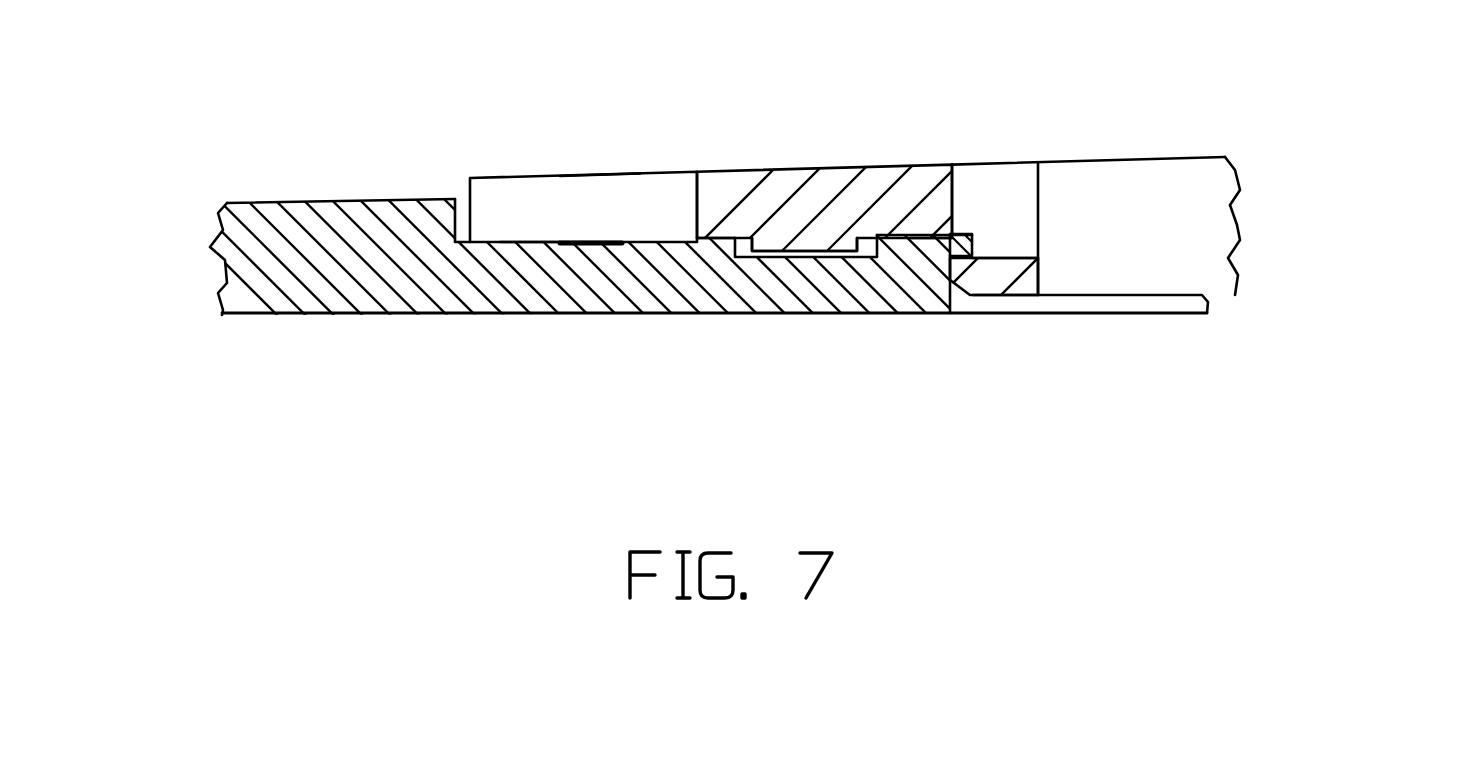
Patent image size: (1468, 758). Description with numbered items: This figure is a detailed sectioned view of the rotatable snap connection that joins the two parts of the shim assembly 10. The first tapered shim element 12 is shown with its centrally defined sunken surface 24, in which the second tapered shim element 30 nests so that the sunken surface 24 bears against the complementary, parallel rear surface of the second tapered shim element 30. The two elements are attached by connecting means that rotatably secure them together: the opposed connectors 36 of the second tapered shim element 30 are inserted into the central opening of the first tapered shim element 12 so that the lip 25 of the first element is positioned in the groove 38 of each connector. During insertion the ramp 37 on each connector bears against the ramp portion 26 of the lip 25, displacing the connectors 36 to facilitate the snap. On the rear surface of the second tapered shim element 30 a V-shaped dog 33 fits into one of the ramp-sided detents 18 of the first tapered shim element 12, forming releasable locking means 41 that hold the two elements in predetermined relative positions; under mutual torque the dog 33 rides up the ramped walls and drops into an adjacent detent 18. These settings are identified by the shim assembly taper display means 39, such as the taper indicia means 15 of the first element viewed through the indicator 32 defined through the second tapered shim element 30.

The shim assembly 10 is at (468, 327).
The first tapered shim element 12 is at (222, 222).
The taper indicia means 15 is at (577, 242).
The ramp-sided detents 18 is at (772, 263).
The sunken surface 24 is at (453, 200).
The lip 25 is at (942, 238).
The ramp portion 26 is at (970, 250).
The second tapered shim element 30 is at (1243, 182).
The indicator 32 is at (505, 198).
The dog 33 is at (795, 240).
The connectors 36 is at (993, 273).
The ramp 37 is at (947, 312).
The groove 38 is at (978, 252).
The shim assembly taper display means 39 is at (605, 176).
The releasable locking means 41 is at (740, 250).